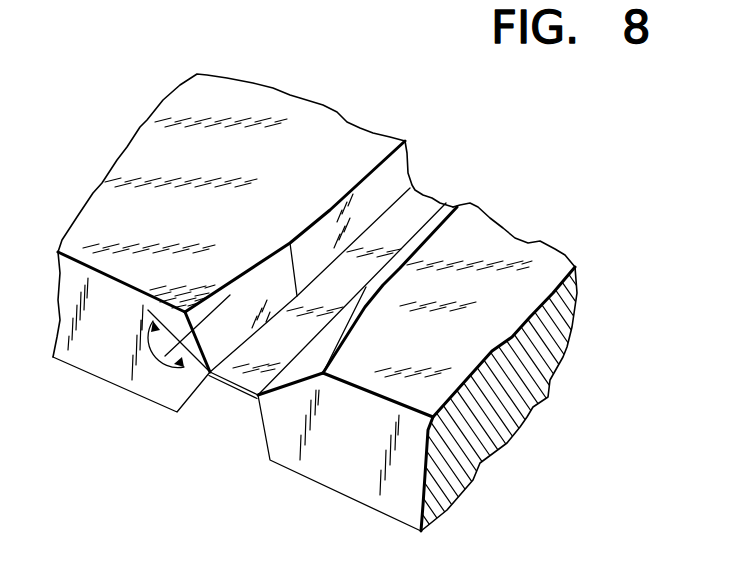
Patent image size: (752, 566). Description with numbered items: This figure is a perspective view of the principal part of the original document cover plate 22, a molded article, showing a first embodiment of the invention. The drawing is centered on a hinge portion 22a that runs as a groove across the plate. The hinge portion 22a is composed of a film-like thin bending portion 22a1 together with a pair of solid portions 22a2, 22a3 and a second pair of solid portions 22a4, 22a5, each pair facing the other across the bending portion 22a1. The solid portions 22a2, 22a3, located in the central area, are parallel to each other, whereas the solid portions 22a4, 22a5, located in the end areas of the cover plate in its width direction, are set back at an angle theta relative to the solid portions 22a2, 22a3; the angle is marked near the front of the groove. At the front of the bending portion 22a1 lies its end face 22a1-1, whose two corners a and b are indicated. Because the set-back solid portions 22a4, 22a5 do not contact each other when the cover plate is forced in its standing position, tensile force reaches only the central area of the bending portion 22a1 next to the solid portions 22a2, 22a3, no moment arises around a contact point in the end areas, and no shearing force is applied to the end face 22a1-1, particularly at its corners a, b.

The original document cover plate 22 is at (522, 250).
The hinge portion 22a is at (432, 183).
The bending portion 22a1 is at (415, 197).
The solid portion 22a2 is at (382, 198).
The solid portion 22a3 is at (458, 207).
The solid portion 22a4 is at (267, 288).
The solid portion 22a5 is at (349, 335).
The end face 22a1-1 is at (237, 389).
The corner a is at (212, 382).
The corner b is at (252, 395).